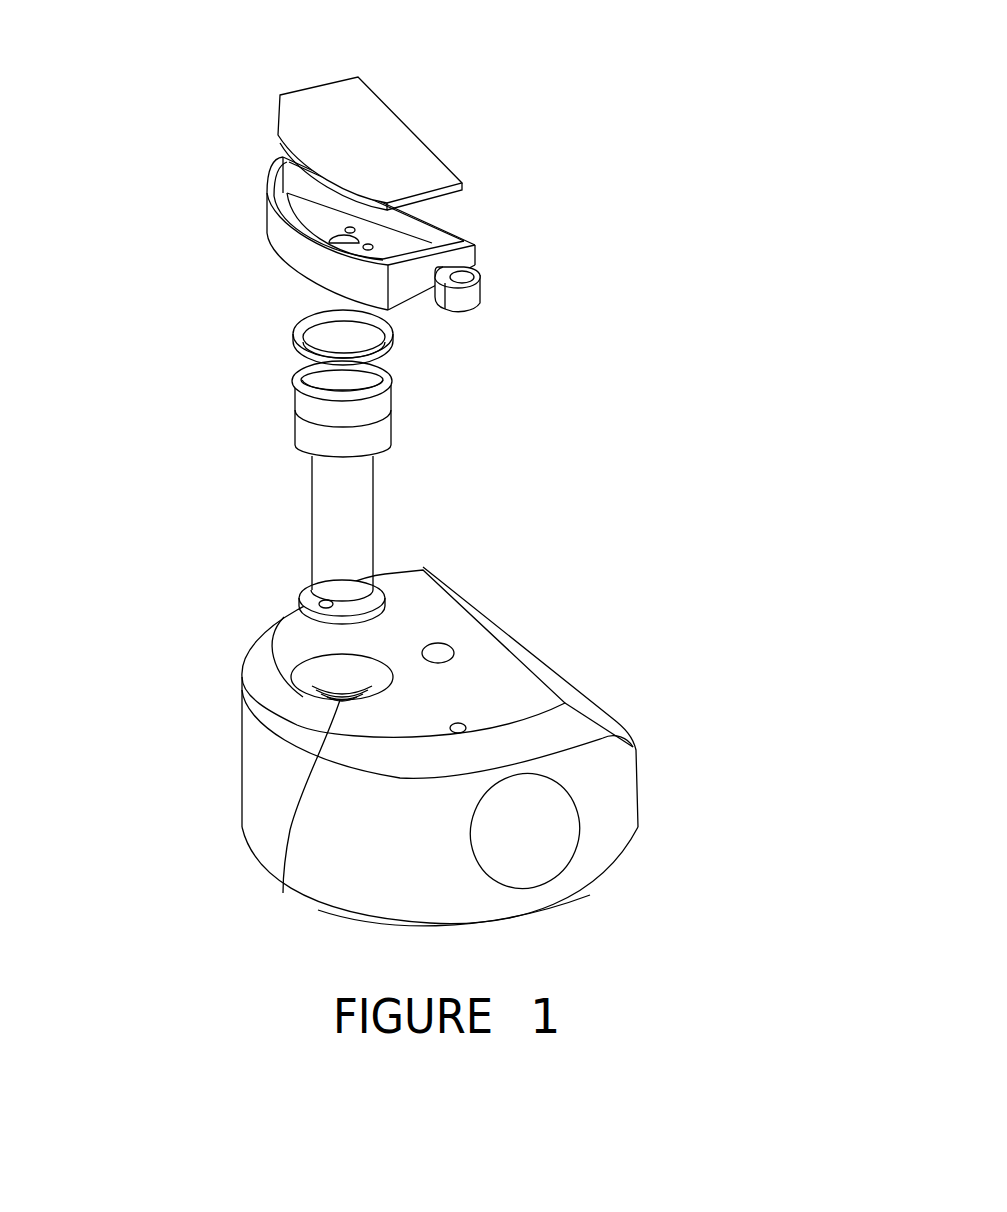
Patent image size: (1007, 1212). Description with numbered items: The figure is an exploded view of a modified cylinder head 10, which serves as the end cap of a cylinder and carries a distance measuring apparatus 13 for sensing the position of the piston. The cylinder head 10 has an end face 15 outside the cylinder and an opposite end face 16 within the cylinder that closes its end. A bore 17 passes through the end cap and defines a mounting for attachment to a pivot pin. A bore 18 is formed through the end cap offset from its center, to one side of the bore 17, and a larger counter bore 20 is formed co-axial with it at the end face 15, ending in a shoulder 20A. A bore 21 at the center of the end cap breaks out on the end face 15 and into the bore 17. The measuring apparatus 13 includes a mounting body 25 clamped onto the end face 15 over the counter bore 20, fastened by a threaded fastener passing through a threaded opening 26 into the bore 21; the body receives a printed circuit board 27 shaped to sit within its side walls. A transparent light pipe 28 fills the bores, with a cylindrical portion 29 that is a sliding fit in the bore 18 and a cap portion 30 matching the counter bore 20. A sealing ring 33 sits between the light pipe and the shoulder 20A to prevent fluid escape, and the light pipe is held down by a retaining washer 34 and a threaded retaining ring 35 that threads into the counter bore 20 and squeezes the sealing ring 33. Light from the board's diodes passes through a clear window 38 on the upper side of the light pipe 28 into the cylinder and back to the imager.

The cylinder head 10 is at (237, 768).
The measuring apparatus 13 is at (263, 190).
The end face 15 is at (478, 686).
The end face 16 is at (600, 884).
The bore 17 is at (538, 837).
The bore 18 is at (296, 784).
The counter bore 20 is at (349, 668).
The shoulder 20A is at (300, 687).
The bore 21 is at (467, 729).
The mounting body 25 is at (482, 255).
The threaded opening 26 is at (481, 276).
The printed circuit board 27 is at (393, 102).
The light pipe 28 is at (376, 458).
The cylindrical portion 29 is at (340, 499).
The cap portion 30 is at (311, 432).
The sealing ring 33 is at (297, 590).
The retaining washer 34 is at (287, 377).
The threaded retaining ring 35 is at (393, 338).
The clear window 38 is at (364, 409).